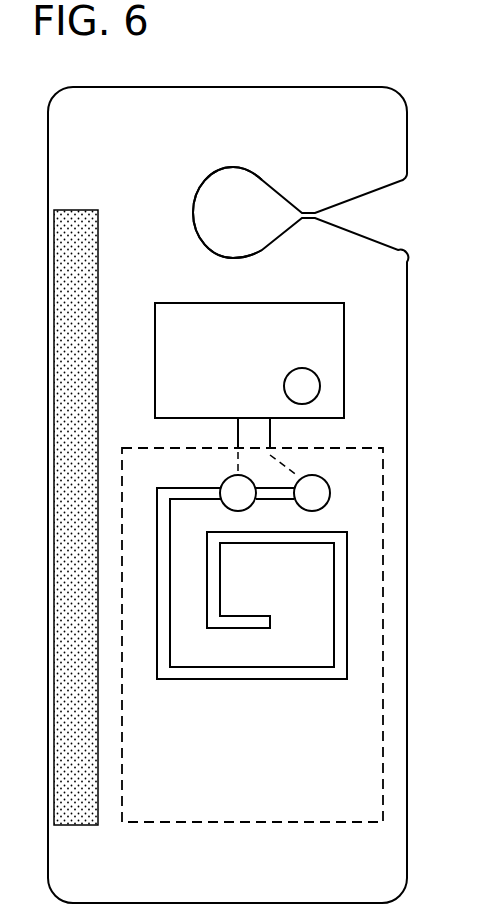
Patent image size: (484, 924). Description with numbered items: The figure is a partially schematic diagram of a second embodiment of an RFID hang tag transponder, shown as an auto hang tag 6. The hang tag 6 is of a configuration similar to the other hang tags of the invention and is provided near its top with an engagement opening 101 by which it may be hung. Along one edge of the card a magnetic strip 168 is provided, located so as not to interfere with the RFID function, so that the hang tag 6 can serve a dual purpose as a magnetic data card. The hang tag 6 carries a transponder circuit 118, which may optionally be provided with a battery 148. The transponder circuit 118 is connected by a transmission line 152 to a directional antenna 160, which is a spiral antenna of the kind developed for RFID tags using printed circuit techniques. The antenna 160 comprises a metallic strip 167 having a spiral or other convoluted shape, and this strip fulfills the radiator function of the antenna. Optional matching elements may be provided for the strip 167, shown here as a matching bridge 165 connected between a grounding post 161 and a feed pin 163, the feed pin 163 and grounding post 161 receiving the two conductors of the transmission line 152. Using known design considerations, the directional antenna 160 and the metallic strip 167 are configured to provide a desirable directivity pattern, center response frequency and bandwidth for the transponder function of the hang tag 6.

The hang tag 6 is at (33, 141).
The engagement opening 101 is at (271, 182).
The transponder circuit 118 is at (253, 303).
The battery 148 is at (312, 372).
The transmission line 152 is at (272, 437).
The directional antenna 160 is at (172, 823).
The grounding post 161 is at (331, 497).
The feed pin 163 is at (223, 481).
The matching bridge 165 is at (265, 500).
The metallic strip 167 is at (220, 680).
The magnetic strip 168 is at (93, 288).